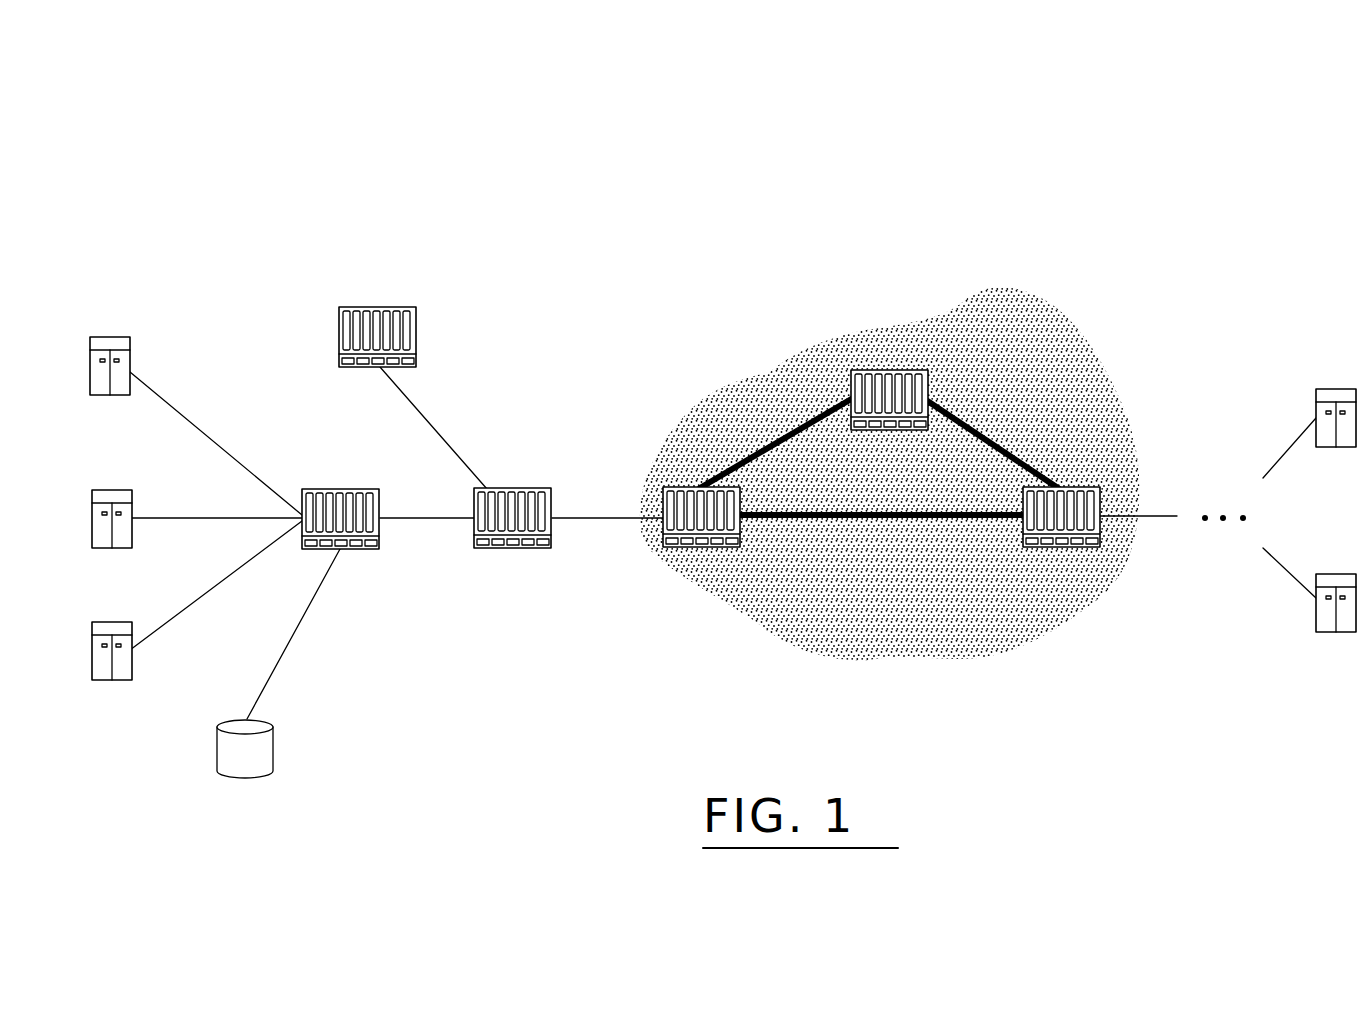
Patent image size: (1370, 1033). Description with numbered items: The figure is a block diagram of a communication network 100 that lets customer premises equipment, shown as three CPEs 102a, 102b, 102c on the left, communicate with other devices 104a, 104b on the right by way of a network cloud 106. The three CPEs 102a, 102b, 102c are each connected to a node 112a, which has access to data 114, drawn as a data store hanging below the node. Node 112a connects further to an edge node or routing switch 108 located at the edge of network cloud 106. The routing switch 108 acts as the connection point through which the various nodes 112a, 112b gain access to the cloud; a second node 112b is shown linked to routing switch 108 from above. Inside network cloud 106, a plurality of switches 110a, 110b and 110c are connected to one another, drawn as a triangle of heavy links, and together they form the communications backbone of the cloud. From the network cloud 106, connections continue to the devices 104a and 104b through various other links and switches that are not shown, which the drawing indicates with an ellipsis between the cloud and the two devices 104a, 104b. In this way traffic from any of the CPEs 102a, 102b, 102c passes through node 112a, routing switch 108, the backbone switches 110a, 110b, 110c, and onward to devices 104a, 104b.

The communication network 100 is at (1015, 148).
The customer premises equipment 102a is at (110, 336).
The customer premises equipment 102b is at (98, 486).
The customer premises equipment 102c is at (98, 618).
The device 104a is at (1330, 389).
The device 104b is at (1330, 632).
The network cloud 106 is at (1020, 283).
The routing switch 108 is at (517, 550).
The switch 110a is at (882, 370).
The switch 110b is at (693, 547).
The switch 110c is at (1053, 547).
The node 112a is at (360, 550).
The node 112b is at (388, 307).
The data 114 is at (272, 757).